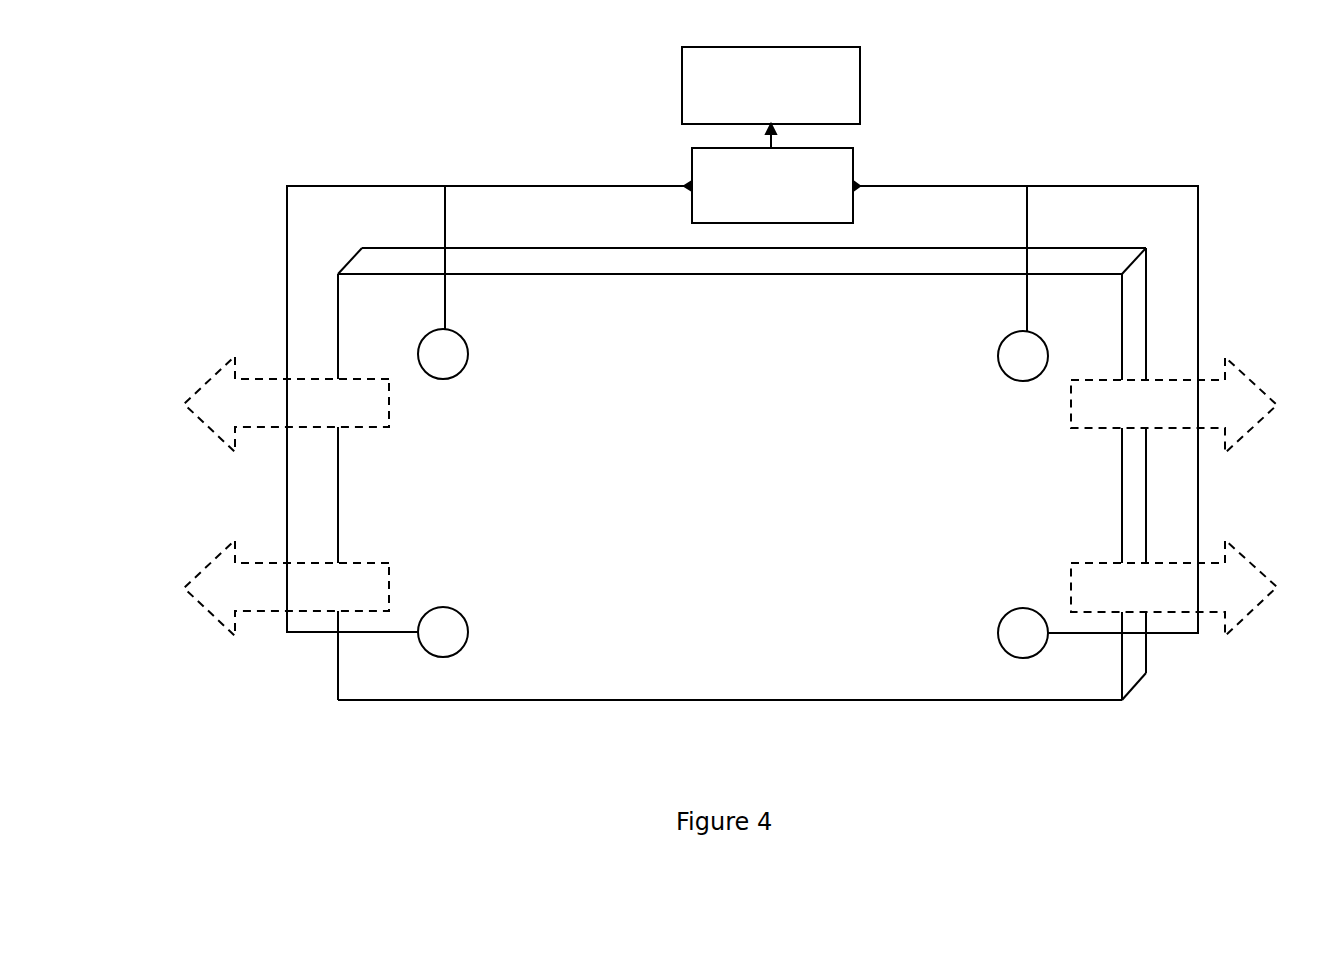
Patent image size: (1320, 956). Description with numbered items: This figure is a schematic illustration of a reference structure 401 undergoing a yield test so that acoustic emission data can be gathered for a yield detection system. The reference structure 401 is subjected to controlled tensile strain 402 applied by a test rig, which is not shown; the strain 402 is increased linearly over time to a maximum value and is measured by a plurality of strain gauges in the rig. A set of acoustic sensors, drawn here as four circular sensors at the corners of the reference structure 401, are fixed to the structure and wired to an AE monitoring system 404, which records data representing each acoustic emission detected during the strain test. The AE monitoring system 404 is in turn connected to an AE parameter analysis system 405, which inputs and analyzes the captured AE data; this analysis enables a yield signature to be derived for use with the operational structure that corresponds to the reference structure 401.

The reference structure 401 is at (638, 248).
The controlled tensile strain 402 is at (418, 352).
The AE monitoring system 404 is at (853, 166).
The AE parameter analysis system 405 is at (682, 86).